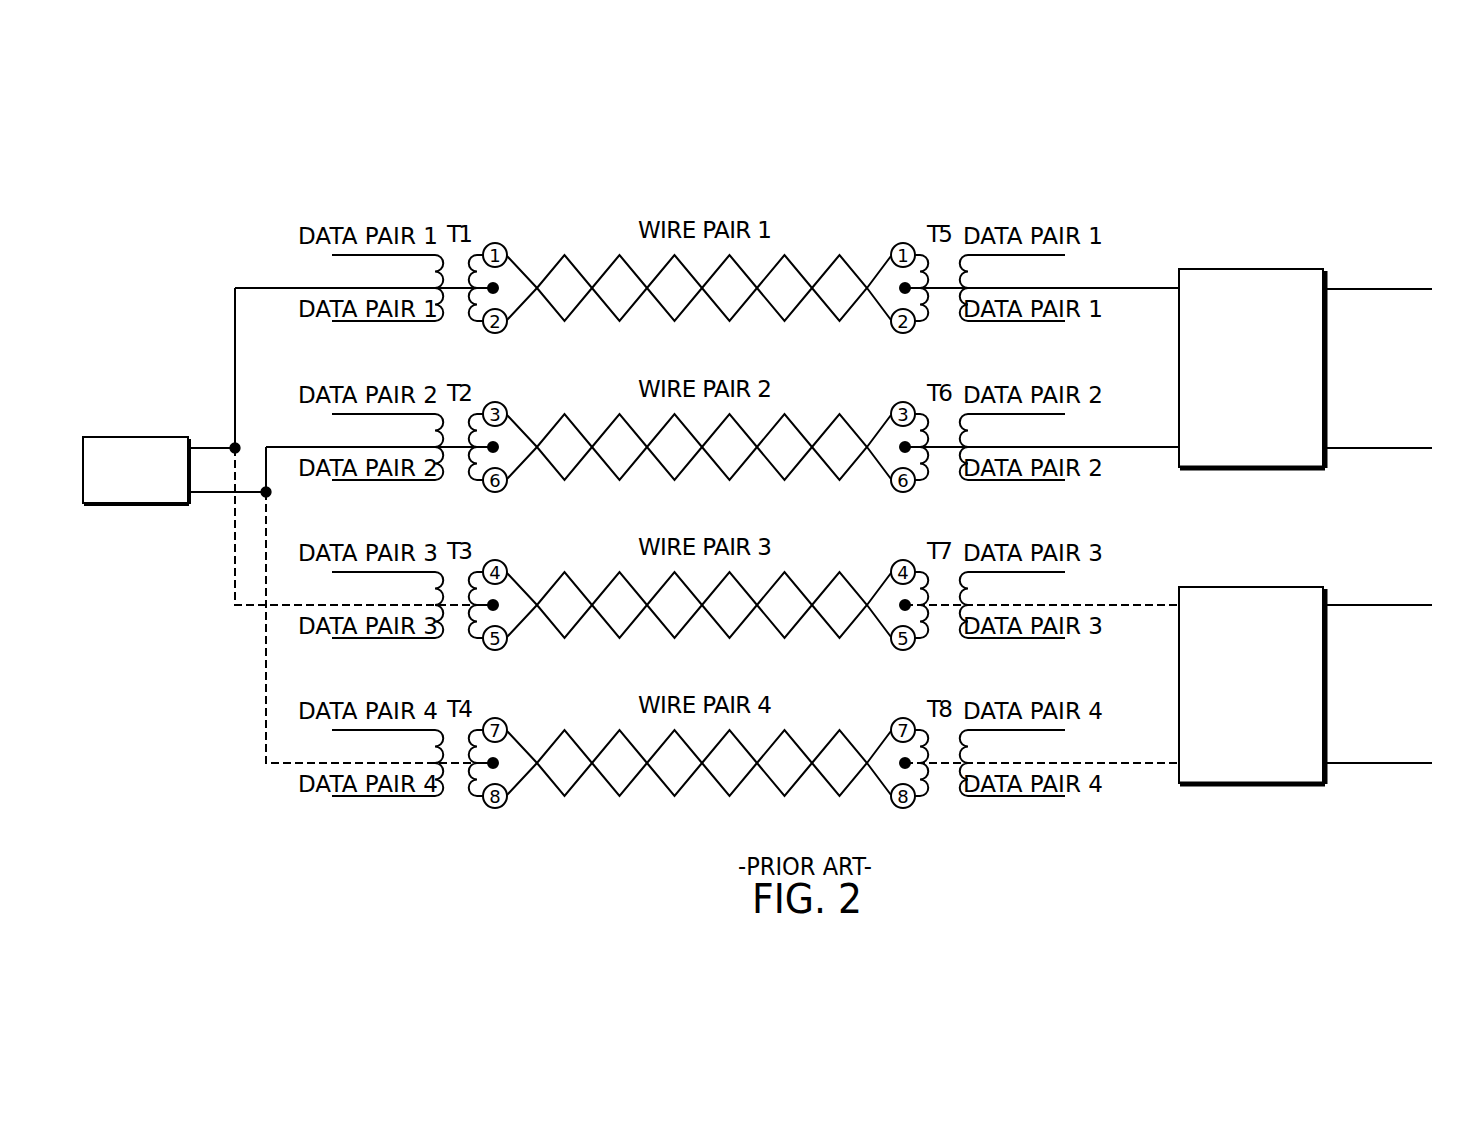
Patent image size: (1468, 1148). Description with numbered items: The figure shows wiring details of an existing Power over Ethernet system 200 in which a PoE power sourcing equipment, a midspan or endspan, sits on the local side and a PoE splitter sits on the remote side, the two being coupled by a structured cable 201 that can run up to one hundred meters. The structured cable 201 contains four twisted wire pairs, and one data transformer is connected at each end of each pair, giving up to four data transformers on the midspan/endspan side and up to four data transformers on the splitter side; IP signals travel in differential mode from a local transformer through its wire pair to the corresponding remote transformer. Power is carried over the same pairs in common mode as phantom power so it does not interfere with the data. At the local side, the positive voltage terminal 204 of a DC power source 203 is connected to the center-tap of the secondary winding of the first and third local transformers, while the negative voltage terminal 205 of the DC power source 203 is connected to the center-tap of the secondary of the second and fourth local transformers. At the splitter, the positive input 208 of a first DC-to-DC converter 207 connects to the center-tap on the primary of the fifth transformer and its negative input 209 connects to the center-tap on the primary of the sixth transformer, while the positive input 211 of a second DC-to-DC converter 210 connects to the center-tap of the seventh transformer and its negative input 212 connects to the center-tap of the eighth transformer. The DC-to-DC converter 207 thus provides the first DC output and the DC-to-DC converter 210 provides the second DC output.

The PoE system 200 is at (1341, 122).
The structured cable 201 is at (809, 226).
The DC power source 203 is at (135, 505).
The positive voltage terminal 204 is at (250, 287).
The negative voltage terminal 205 is at (268, 446).
The first DC-to-DC converter 207 is at (1250, 469).
The positive input 208 is at (1127, 290).
The negative input 209 is at (1131, 449).
The second DC-to-DC converter 210 is at (1250, 785).
The positive input 211 is at (1133, 607).
The negative input 212 is at (1133, 765).